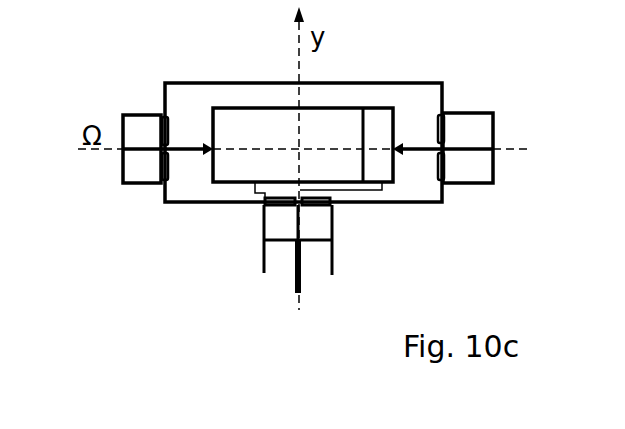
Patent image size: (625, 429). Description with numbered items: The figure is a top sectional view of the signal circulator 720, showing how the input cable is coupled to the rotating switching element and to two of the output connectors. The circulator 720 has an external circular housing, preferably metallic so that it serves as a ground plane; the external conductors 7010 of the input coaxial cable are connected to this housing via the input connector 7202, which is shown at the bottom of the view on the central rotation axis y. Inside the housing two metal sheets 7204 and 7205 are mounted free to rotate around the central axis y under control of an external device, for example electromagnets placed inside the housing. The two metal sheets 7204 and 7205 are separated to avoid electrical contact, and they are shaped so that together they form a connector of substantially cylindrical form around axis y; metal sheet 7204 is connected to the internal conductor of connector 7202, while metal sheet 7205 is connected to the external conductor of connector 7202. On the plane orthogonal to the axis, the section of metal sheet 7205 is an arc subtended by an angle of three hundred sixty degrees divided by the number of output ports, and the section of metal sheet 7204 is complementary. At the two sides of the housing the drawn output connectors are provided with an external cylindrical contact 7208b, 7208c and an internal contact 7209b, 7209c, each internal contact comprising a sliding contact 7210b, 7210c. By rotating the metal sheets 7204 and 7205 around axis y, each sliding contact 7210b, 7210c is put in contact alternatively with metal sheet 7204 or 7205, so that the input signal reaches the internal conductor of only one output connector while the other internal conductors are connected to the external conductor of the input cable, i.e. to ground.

The circulator 720 is at (178, 216).
The metal sheet 7204 is at (260, 137).
The metal sheet 7205 is at (382, 128).
The external cylindrical contact 7208c is at (143, 183).
The internal contact 7209c is at (155, 148).
The sliding contact 7210c is at (201, 132).
The external cylindrical contact 7208b is at (463, 185).
The internal contact 7209b is at (463, 143).
The sliding contact 7210b is at (406, 131).
The connector 7202 is at (320, 226).
The external conductors 7010 is at (263, 267).